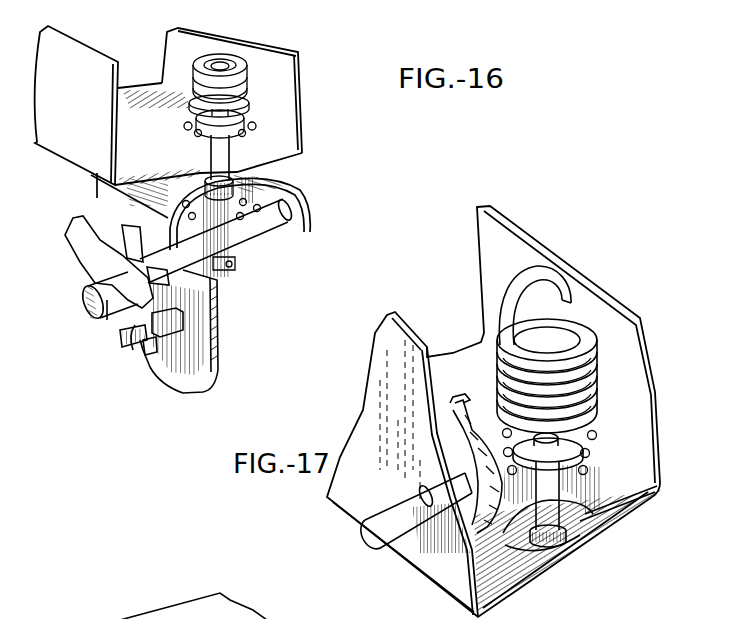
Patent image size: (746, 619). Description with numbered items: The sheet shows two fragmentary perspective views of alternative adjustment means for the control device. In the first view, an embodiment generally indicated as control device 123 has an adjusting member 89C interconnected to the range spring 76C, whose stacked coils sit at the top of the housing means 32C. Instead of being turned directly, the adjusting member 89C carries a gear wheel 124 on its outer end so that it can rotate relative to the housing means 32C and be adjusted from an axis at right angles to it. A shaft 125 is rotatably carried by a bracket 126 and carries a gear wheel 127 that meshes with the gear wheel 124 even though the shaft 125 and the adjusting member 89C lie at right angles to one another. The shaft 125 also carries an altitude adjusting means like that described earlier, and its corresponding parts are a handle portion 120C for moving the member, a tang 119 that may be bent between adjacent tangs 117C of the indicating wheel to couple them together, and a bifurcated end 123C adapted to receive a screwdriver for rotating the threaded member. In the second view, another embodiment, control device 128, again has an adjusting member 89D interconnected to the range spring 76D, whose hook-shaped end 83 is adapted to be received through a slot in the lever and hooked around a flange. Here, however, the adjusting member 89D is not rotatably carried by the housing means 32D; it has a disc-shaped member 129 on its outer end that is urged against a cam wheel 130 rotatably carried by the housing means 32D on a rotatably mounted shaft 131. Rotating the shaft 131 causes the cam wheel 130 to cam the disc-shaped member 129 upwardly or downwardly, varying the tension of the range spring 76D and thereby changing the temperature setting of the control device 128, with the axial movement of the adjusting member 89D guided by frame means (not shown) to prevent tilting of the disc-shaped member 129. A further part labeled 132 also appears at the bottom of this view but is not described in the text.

In FIG. 16, the control device 123 is at (295, 40).
In FIG. 16, the range spring 76C is at (237, 82).
In FIG. 16, the housing means 32C is at (287, 107).
In FIG. 16, the adjusting member 89C is at (217, 160).
In FIG. 16, the gear wheel 124 is at (290, 195).
In FIG. 16, the shaft 125 is at (175, 235).
In FIG. 16, the gear wheel 127 is at (236, 260).
In FIG. 16, the handle portion 120C is at (80, 242).
In FIG. 16, the bifurcated end 123C is at (93, 317).
In FIG. 16, the tang 119 is at (167, 302).
In FIG. 16, the bracket 126 is at (200, 372).
In FIG. 16, the tangs 117C is at (143, 357).
In FIG. 17, the hook-shaped end 83 is at (523, 272).
In FIG. 17, the control device 128 is at (612, 272).
In FIG. 17, the range spring 76D is at (597, 360).
In FIG. 17, the housing means 32D is at (637, 422).
In FIG. 17, the cam wheel 130 is at (468, 395).
In FIG. 17, the shaft 131 is at (427, 487).
In FIG. 17, the disc-shaped member 129 is at (653, 503).
In FIG. 17, the adjusting member 89D is at (572, 518).
In FIG. 17, the member 132 is at (347, 618).